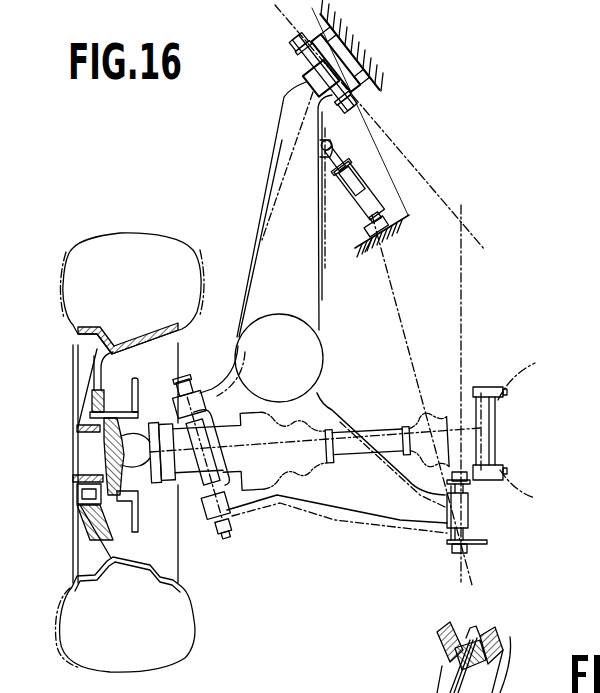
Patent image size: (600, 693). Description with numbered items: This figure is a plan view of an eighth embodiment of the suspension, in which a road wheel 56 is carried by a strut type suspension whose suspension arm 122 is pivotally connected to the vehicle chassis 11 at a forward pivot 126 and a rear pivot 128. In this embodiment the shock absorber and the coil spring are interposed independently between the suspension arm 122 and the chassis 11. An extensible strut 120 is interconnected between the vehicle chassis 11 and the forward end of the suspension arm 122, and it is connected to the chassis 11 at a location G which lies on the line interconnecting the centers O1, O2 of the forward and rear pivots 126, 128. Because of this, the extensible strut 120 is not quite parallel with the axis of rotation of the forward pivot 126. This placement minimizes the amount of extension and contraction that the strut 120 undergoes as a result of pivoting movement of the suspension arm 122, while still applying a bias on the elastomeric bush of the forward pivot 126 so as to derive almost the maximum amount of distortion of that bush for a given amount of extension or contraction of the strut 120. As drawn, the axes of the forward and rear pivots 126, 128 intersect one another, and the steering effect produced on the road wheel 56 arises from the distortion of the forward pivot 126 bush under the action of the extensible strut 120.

The road wheel 56 is at (173, 635).
The extensible strut 120 is at (373, 192).
The suspension arm 122 is at (337, 498).
The forward pivot 126 is at (312, 80).
The rear pivot 128 is at (443, 515).
The center of the forward pivot O1 is at (342, 74).
The center of the rear pivot O2 is at (468, 515).
The connection location of the extensible strut to the chassis G is at (378, 213).
The vehicle chassis 11 is at (394, 232).